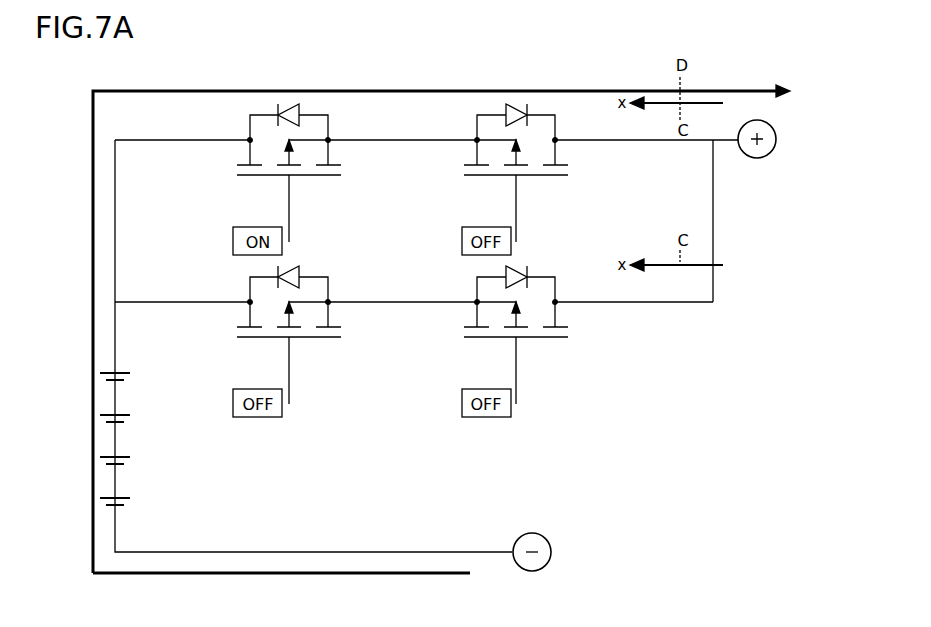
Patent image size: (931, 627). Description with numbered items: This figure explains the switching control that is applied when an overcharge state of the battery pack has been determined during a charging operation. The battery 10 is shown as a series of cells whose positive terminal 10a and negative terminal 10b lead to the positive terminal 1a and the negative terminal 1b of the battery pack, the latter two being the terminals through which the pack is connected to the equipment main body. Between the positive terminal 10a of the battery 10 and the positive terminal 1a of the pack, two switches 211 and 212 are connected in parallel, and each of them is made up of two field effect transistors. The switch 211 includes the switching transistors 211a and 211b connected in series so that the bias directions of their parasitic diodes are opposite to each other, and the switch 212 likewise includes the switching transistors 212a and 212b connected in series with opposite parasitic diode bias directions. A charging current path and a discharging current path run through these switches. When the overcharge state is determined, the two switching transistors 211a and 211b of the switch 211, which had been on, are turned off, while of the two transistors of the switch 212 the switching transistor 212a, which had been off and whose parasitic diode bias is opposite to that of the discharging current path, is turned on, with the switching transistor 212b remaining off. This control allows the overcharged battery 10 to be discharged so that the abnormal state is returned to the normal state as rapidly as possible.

The switch 212 is at (310, 59).
The switching transistor 212a is at (303, 110).
The switching transistor 212b is at (503, 110).
The switch 211 is at (452, 395).
The switching transistor 211a is at (330, 342).
The switching transistor 211b is at (472, 342).
The battery 10 is at (83, 373).
The positive terminal 10a is at (113, 372).
The negative terminal 10b is at (112, 505).
The positive terminal 1a is at (766, 157).
The negative terminal 1b is at (552, 552).